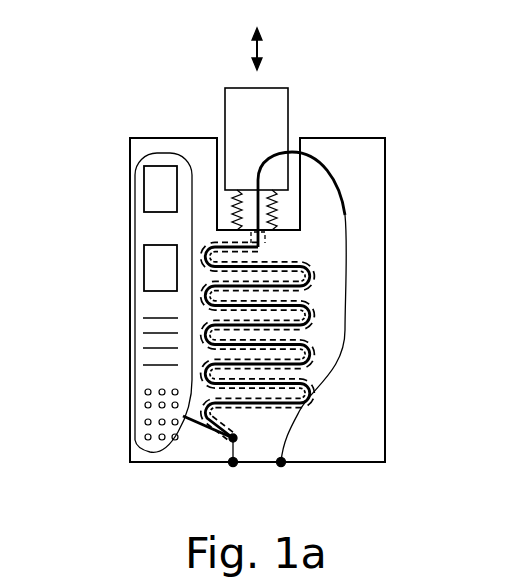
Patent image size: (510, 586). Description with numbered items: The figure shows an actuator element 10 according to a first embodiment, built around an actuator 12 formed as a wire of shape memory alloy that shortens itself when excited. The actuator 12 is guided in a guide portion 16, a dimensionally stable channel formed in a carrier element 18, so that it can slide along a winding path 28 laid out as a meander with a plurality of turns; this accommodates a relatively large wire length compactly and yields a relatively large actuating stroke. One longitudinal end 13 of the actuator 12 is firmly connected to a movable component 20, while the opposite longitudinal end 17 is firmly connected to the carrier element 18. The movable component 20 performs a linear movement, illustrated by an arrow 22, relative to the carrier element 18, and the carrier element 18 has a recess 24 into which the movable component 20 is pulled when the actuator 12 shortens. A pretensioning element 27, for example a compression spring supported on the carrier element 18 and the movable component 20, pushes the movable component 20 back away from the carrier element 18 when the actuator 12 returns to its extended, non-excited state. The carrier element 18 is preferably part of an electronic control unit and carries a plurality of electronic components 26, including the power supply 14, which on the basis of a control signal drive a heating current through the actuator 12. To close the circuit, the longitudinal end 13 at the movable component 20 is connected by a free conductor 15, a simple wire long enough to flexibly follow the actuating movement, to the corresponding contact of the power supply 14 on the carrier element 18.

The actuator element 10 is at (98, 76).
The actuator 12 is at (314, 381).
The longitudinal end 13 is at (247, 180).
The power supply 14 is at (218, 485).
The free conductor 15 is at (290, 153).
The guide portion 16 is at (306, 335).
The longitudinal end 17 is at (236, 443).
The carrier element 18 is at (377, 148).
The movable component 20 is at (272, 100).
The arrow 22 is at (250, 50).
The recess 24 is at (218, 176).
The electronic components 26 is at (150, 183).
The pretensioning element 27 is at (273, 210).
The winding path 28 is at (296, 397).